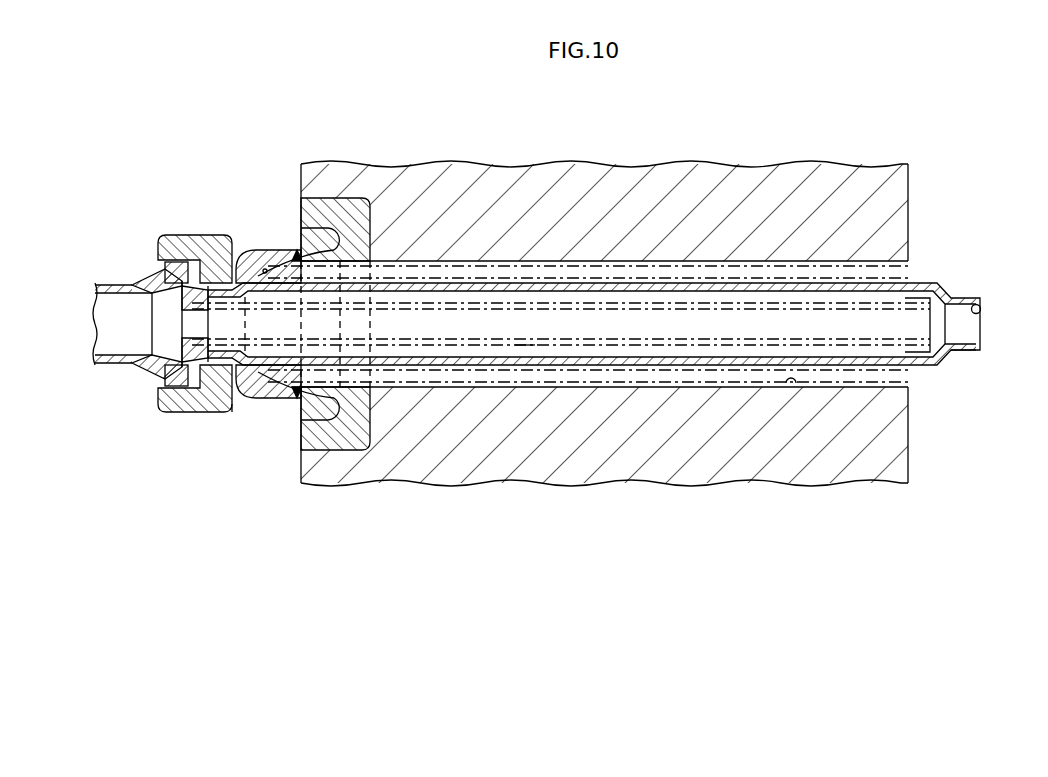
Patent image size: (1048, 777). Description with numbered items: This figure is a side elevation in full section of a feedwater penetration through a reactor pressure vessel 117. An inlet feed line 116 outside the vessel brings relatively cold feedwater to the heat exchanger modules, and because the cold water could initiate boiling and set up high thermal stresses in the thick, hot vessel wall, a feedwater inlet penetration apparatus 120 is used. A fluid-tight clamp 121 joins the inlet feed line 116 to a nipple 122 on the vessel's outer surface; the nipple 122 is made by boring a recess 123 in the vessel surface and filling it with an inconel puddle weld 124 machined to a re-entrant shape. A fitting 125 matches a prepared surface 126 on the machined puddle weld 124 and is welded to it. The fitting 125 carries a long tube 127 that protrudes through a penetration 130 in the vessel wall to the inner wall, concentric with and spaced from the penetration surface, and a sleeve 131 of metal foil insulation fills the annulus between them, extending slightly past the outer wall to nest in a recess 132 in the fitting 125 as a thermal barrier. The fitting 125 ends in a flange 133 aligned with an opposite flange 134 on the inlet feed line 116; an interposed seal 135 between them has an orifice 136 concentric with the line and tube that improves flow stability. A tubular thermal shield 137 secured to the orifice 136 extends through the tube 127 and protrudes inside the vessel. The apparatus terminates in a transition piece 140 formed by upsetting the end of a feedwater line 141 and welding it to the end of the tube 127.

The inlet feed line 116 is at (103, 358).
The reactor pressure vessel 117 is at (643, 230).
The feedwater inlet penetration apparatus 120 is at (676, 382).
The fluid-tight clamp 121 is at (238, 410).
The nipple 122 is at (288, 412).
The recess 123 is at (337, 447).
The puddle weld 124 is at (358, 418).
The fitting 125 is at (277, 251).
The prepared surface 126 is at (338, 236).
The tube 127 is at (610, 363).
The penetration 130 is at (792, 383).
The sleeve 131 is at (716, 262).
The recess 132 is at (263, 269).
The flange 133 is at (210, 385).
The flange 134 is at (173, 373).
The seal 135 is at (167, 287).
The orifice 136 is at (187, 313).
The tubular thermal shield 137 is at (524, 343).
The transition piece 140 is at (953, 355).
The feedwater line 141 is at (981, 305).